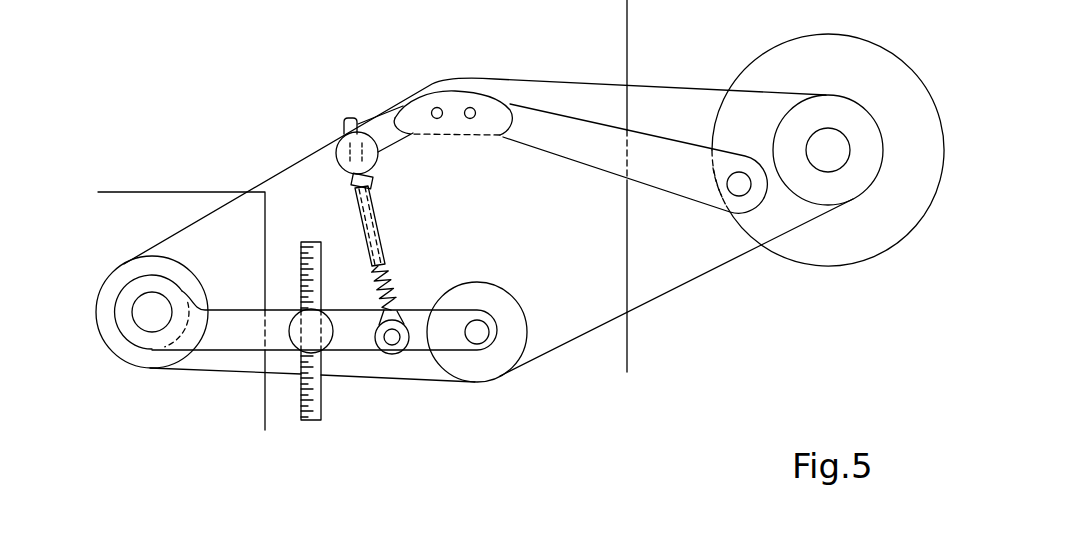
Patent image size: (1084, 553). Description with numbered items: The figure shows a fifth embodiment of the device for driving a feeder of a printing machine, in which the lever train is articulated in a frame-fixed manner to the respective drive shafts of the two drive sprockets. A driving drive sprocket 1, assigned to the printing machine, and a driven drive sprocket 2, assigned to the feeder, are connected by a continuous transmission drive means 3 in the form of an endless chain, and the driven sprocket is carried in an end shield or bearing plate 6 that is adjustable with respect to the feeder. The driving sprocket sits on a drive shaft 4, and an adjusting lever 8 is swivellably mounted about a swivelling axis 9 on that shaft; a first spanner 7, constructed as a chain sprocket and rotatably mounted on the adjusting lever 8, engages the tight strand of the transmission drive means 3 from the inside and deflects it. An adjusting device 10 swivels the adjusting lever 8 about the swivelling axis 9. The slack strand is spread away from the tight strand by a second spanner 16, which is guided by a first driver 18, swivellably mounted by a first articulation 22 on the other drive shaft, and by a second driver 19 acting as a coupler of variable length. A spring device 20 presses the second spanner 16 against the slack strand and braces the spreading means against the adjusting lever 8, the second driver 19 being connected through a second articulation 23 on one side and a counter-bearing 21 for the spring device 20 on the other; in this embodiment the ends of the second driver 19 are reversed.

The driving drive sprocket 1 is at (159, 362).
The driven drive sprocket 2 is at (867, 143).
The transmission drive means 3 is at (677, 288).
The drive shaft 4 is at (130, 278).
The swivelling axis 9 is at (139, 303).
The end shield or bearing plate 6 is at (887, 235).
The first spanner or tension member 7 is at (503, 363).
The adjusting lever 8 is at (243, 333).
The adjusting device 10 is at (313, 423).
The second spanner or tensioning member 16 is at (455, 92).
The first link or driver 18 is at (572, 148).
The second link or driver 19 is at (377, 215).
The spring device 20 is at (388, 262).
The counter-bearing 21 is at (341, 162).
The first articulation or joint 22 is at (728, 203).
The second articulation 23 is at (350, 367).